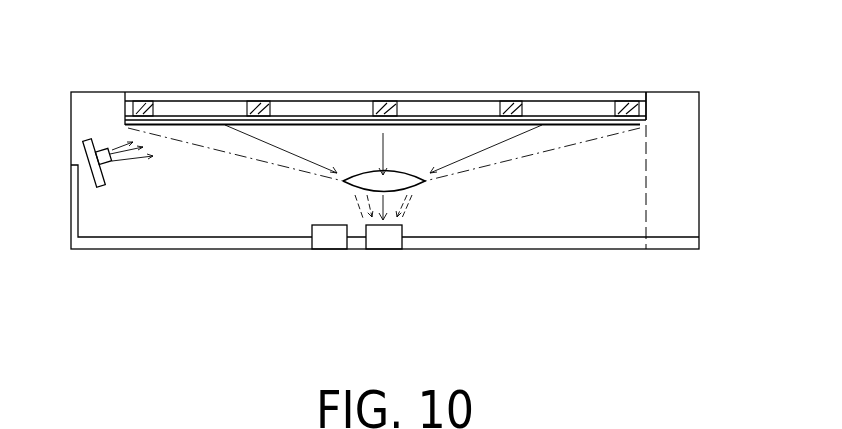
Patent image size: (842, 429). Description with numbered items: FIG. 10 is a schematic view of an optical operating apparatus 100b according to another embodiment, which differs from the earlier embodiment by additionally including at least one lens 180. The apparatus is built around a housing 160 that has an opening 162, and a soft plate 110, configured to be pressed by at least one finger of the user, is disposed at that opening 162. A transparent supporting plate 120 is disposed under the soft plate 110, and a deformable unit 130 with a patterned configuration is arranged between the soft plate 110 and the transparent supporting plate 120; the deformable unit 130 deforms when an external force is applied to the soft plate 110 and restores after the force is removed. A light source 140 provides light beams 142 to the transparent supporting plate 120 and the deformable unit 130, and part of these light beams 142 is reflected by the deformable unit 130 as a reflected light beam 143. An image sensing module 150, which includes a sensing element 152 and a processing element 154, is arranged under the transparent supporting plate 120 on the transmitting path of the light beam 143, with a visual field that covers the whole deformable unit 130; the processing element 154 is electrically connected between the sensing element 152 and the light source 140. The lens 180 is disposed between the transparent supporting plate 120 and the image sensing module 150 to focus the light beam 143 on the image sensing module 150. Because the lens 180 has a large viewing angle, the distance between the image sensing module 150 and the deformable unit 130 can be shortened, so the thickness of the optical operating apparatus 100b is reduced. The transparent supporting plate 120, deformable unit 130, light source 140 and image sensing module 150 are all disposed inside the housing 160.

The optical operating apparatus 100b is at (633, 317).
The soft plate 110 is at (312, 92).
The transparent supporting plate 120 is at (642, 120).
The deformable unit 130 is at (632, 110).
The light source 140 is at (90, 143).
The light beams 142 is at (115, 143).
The light beam 143 is at (385, 152).
The image sensing module 150 is at (298, 305).
The sensing element 152 is at (387, 243).
The processing element 154 is at (325, 243).
The housing 160 is at (699, 215).
The opening 162 is at (642, 88).
The lens 180 is at (405, 183).